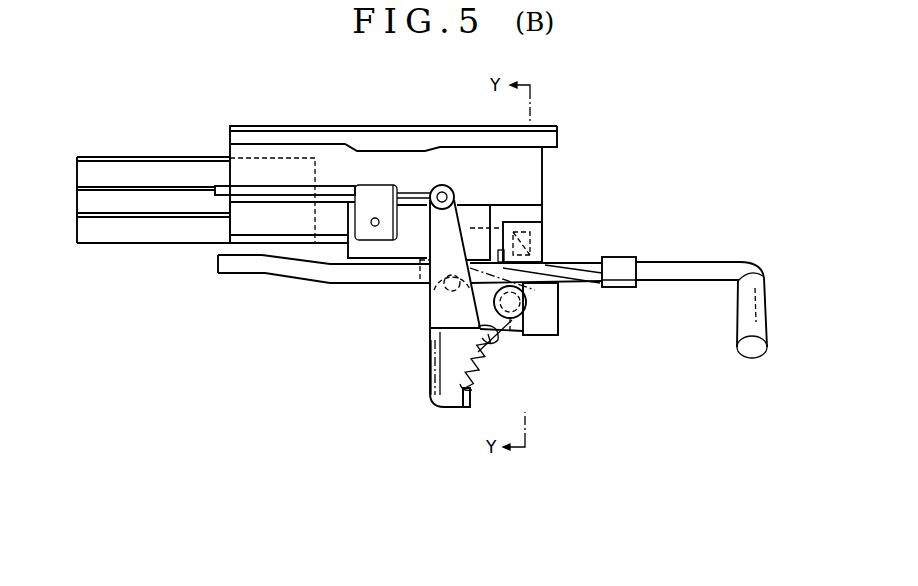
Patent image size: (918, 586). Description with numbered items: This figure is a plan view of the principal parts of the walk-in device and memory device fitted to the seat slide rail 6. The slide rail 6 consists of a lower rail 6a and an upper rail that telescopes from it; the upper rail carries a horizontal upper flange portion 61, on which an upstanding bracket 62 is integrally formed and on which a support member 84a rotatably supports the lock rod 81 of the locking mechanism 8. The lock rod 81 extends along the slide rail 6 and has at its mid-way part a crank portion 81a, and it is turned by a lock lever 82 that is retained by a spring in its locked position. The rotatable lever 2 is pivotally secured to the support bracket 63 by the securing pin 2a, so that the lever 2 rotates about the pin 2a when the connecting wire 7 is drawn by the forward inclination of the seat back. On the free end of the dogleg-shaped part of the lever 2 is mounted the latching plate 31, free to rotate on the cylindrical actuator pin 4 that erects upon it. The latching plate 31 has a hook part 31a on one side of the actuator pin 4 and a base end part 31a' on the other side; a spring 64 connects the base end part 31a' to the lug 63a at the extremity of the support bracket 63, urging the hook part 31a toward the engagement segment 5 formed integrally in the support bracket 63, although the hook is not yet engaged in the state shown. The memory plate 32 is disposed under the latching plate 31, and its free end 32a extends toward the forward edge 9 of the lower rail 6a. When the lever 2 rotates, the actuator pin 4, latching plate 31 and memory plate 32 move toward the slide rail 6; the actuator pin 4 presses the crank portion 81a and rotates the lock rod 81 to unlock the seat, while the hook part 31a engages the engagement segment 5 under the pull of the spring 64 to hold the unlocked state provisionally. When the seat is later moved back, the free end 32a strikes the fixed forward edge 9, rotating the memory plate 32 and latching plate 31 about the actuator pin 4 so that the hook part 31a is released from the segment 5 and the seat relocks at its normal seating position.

The rotatable lever 2 is at (438, 318).
The securing pin 2a is at (450, 290).
The actuator pin 4 is at (513, 320).
The engagement segment 5 is at (553, 292).
The slide rail 6 is at (218, 147).
The lower rail 6a is at (150, 170).
The connecting wire 7 is at (273, 192).
The locking mechanism 8 is at (252, 280).
The forward edge 9 is at (317, 178).
The latching plate 31 is at (545, 334).
The hook part 31a is at (529, 242).
The base end part 31a' is at (509, 355).
The memory plate 32 is at (560, 322).
The free end 32a is at (507, 225).
The horizontal upper flange portion 61 is at (237, 221).
The upstanding bracket 62 is at (406, 140).
The support bracket 63 is at (432, 362).
The lug 63a is at (465, 407).
The spring 64 is at (480, 382).
The lock rod 81 is at (310, 284).
The crank portion 81a is at (353, 284).
The lock lever 82 is at (740, 332).
The support member 84a is at (628, 287).